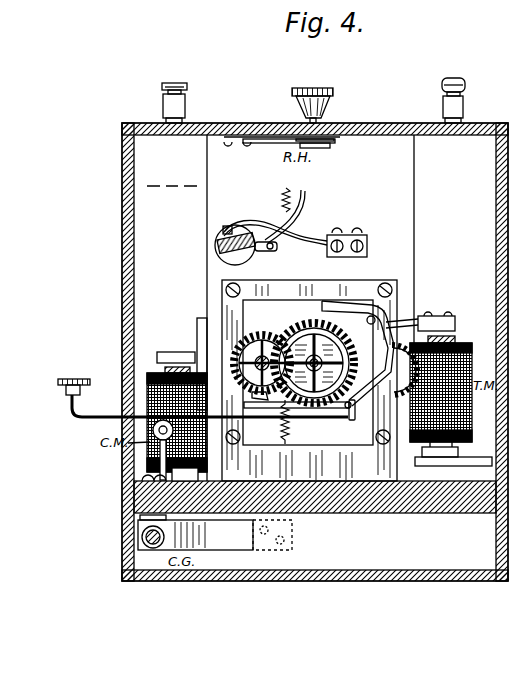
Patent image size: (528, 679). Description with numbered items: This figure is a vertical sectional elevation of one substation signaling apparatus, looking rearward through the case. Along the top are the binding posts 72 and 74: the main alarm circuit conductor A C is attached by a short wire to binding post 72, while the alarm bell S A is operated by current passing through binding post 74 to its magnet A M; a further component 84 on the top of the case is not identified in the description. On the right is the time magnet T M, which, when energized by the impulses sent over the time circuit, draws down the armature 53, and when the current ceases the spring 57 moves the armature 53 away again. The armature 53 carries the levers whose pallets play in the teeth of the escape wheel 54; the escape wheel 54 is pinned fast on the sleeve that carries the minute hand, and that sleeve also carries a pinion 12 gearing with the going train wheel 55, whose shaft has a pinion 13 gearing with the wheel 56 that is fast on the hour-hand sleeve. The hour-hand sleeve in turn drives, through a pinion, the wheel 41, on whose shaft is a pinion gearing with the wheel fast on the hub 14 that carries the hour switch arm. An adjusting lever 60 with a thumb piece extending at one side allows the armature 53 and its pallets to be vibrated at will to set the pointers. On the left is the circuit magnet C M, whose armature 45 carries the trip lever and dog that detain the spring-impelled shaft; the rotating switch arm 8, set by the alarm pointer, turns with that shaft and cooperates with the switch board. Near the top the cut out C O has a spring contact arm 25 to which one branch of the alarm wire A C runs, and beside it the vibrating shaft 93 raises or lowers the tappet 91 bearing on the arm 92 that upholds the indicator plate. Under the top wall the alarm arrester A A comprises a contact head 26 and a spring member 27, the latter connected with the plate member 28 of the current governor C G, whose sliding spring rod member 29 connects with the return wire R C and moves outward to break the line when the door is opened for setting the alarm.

The rotating switch arm 8 is at (122, 186).
The binding post 74 is at (187, 110).
The binding post 72 is at (469, 100).
The bell 84 is at (331, 96).
The contact head 26 is at (282, 149).
The spring member 27 is at (316, 151).
The vibrating shaft 93 is at (224, 243).
The spring contact arm 25 is at (295, 231).
The tappet 91 is at (305, 198).
The arm 92 is at (284, 196).
The escape wheel 54 is at (300, 332).
The wheel 55 is at (262, 352).
The wheel 41 is at (404, 375).
The wheel 56 is at (335, 326).
The armature 53 is at (455, 321).
The armature 45 is at (185, 352).
The adjusting lever 60 is at (110, 416).
The hub 14 is at (359, 413).
The pinion 12 is at (296, 413).
The pinion 13 is at (257, 402).
The spring 57 is at (289, 430).
The plate member 28 is at (215, 532).
The sliding spring rod member 29 is at (149, 548).